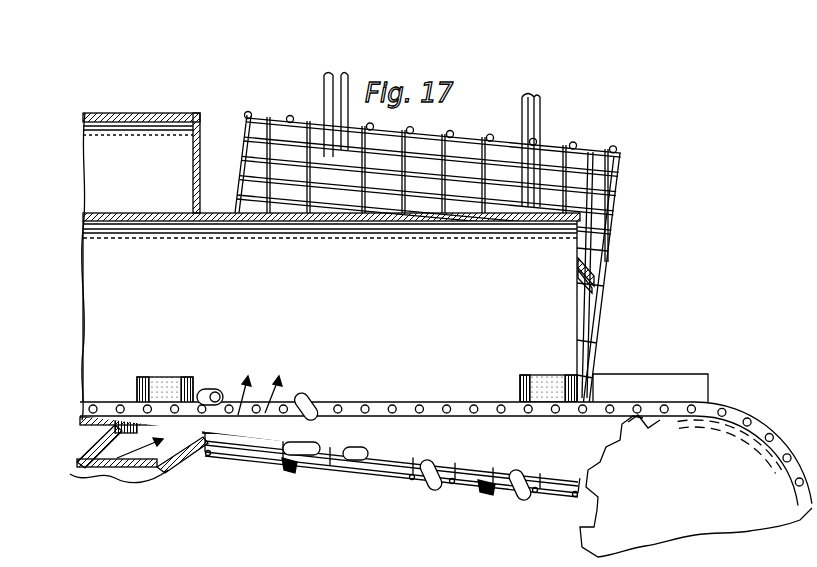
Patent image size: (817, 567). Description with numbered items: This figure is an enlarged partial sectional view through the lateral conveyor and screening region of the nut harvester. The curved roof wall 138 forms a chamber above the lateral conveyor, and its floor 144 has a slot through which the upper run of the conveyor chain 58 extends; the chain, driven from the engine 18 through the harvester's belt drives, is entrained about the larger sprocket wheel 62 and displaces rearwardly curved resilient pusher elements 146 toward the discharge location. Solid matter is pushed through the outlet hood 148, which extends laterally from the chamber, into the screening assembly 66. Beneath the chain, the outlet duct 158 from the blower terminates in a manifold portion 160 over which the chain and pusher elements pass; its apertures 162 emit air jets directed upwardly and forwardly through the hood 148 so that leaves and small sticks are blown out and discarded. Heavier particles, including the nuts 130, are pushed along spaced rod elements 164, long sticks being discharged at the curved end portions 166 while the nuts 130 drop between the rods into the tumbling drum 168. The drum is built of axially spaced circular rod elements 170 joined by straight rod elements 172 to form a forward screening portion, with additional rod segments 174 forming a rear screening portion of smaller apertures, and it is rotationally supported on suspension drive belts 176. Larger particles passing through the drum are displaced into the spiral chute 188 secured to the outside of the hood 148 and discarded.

The engine 18 is at (571, 125).
The conveyor chain 58 is at (652, 401).
The larger sprocket wheel 62 is at (743, 458).
The screening assembly 66 is at (650, 153).
The nuts 130 is at (432, 486).
The curved roof wall 138 is at (122, 113).
The floor 144 is at (96, 423).
The pusher elements 146 is at (556, 382).
The outlet hood 148 is at (215, 213).
The outlet duct 158 is at (180, 470).
The manifold portion 160 is at (238, 425).
The apertures 162 is at (250, 416).
The rod elements 164 is at (477, 425).
The curved end portions 166 is at (727, 432).
The tumbling drum 168 is at (595, 148).
The circular rod elements 170 is at (612, 206).
The straight rod elements 172 is at (390, 468).
The rod segments 174 is at (273, 167).
The suspension drive belts 176 is at (522, 125).
The spiral chute 188 is at (594, 264).